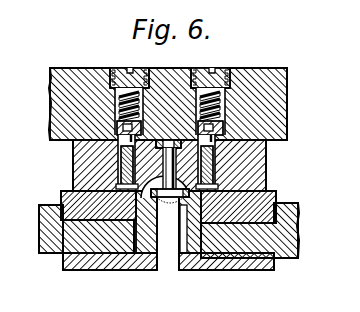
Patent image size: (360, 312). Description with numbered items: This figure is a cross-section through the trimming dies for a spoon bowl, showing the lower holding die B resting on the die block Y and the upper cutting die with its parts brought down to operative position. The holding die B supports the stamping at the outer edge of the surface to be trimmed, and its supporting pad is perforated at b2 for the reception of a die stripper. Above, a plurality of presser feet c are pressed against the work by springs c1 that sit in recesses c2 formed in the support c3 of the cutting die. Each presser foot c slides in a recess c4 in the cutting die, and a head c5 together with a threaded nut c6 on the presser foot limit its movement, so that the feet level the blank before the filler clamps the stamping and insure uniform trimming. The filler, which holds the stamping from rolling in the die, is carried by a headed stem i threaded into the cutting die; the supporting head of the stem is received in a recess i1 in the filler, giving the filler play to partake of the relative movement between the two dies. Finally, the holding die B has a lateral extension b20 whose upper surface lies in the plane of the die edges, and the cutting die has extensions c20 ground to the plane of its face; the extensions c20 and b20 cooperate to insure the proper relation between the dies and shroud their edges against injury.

The support of the die c3 is at (62, 75).
The recesses c2 is at (105, 97).
The springs c1 is at (213, 100).
The head c5 is at (214, 118).
The recess c4 is at (210, 150).
The presser feet c is at (213, 165).
The threaded nut c6 is at (110, 167).
The extensions c20 is at (73, 174).
The holding die B is at (268, 191).
The perforation b2 is at (162, 230).
The headed stem i is at (180, 248).
The recess i1 is at (165, 190).
The lateral extension b20 is at (61, 206).
The die block Y is at (278, 232).